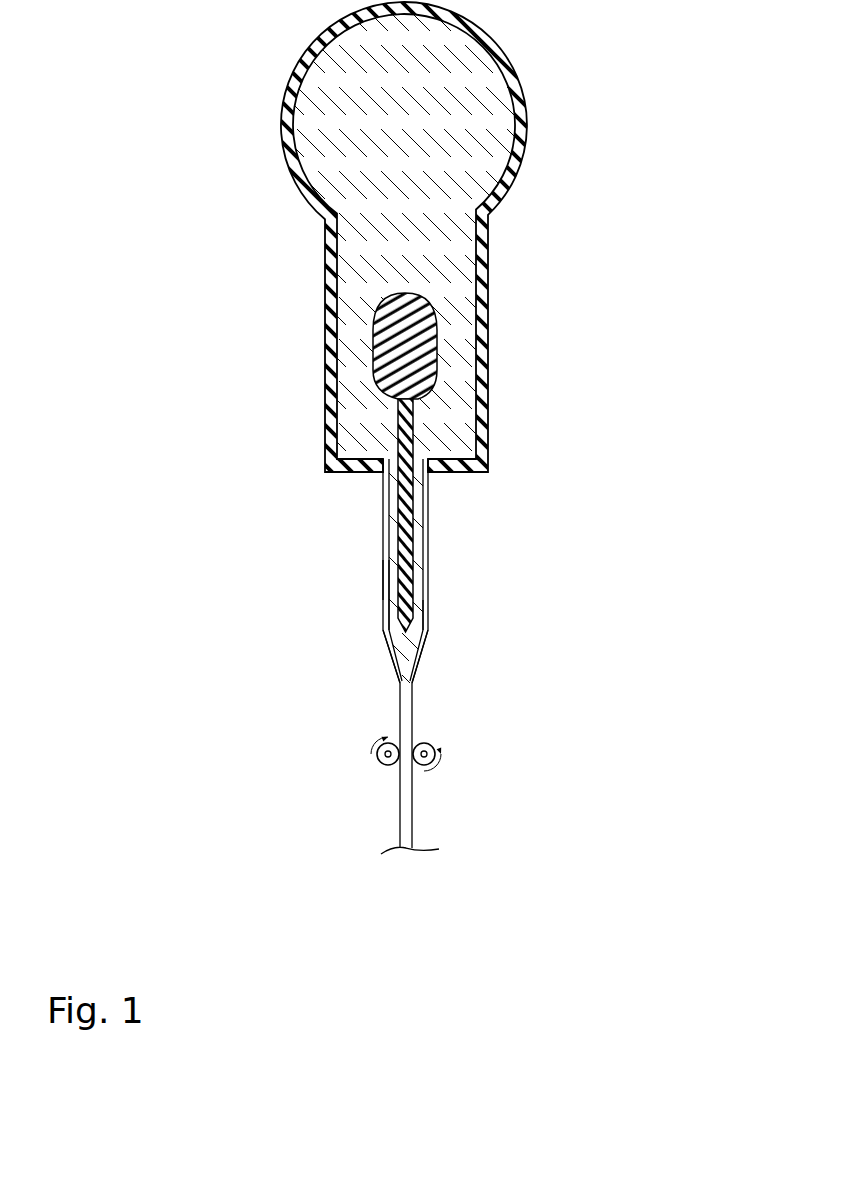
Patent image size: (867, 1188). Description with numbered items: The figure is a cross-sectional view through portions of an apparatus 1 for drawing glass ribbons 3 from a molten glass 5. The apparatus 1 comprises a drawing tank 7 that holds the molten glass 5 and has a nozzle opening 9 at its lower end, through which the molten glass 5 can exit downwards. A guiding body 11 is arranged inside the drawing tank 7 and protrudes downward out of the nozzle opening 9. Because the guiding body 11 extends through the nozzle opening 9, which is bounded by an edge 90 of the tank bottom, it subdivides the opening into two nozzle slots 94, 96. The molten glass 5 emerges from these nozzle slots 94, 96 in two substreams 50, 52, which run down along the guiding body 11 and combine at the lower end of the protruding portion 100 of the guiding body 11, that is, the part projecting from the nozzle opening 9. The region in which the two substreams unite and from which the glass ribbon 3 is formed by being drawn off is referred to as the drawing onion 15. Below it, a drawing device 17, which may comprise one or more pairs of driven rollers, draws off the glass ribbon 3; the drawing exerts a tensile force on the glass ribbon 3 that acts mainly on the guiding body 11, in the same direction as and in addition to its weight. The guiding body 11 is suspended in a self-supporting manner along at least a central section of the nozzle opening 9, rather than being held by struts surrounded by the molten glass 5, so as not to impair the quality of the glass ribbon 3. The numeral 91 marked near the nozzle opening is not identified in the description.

The apparatus 1 is at (160, 129).
The glass ribbon 3 is at (410, 820).
The molten glass 5 is at (472, 116).
The drawing tank 7 is at (488, 243).
The nozzle opening 9 is at (423, 453).
The guiding body 11 is at (397, 422).
The drawing onion 15 is at (410, 643).
The drawing device 17 is at (432, 741).
The substream of molten glass 50 is at (428, 587).
The substream of molten glass 52 is at (383, 580).
The edge 90 is at (417, 473).
The opening edge 91 is at (383, 472).
The nozzle slot 94 is at (438, 478).
The nozzle slot 96 is at (389, 467).
The protruding portion of guiding body 100 is at (392, 612).